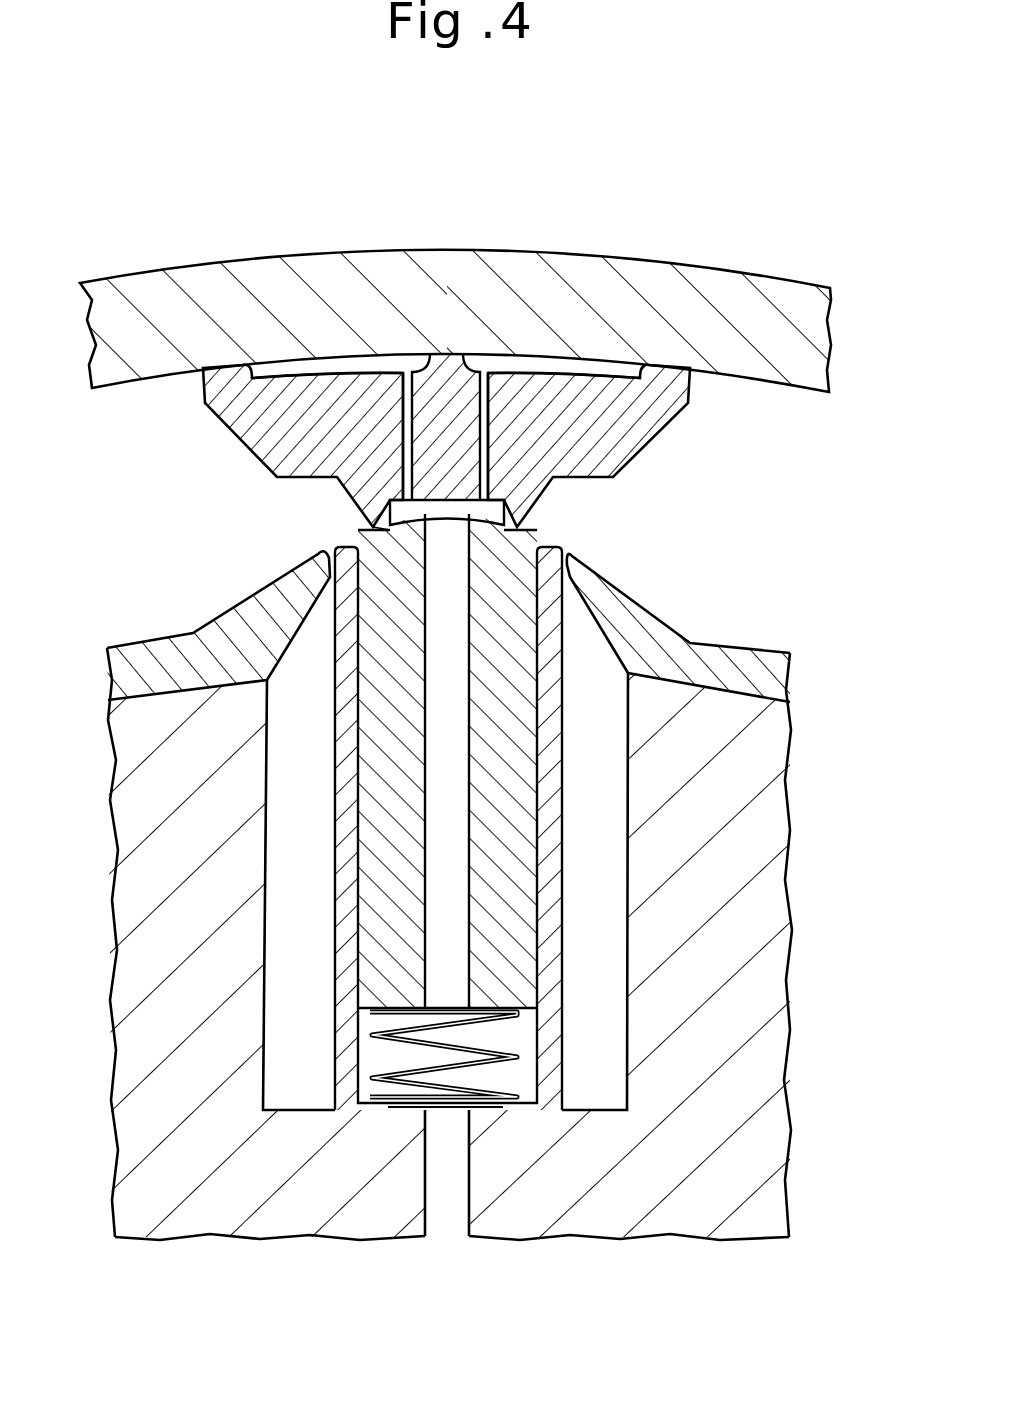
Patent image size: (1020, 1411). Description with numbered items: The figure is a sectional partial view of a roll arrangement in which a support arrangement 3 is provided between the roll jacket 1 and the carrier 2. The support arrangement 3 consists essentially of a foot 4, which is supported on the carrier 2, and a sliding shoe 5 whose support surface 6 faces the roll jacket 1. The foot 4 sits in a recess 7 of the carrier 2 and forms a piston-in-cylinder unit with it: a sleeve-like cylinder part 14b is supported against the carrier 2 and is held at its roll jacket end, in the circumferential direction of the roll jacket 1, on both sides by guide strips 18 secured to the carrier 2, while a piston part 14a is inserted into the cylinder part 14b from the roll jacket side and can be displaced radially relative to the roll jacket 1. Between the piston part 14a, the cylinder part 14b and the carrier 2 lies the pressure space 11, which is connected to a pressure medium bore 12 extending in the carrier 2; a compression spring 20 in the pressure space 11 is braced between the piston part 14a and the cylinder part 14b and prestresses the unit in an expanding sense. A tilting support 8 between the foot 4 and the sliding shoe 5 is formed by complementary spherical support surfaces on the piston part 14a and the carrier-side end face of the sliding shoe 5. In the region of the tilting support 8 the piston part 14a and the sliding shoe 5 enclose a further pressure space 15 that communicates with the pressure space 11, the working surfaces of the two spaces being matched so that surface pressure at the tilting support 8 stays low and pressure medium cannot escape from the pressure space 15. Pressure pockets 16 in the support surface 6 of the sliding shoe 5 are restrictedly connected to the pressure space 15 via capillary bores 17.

The roll jacket 1 is at (778, 297).
The carrier 2 is at (210, 1212).
The support arrangement 3 is at (165, 508).
The foot 4 is at (572, 853).
The sliding shoe 5 is at (650, 423).
The support surface 6 is at (453, 352).
The recess 7 is at (288, 828).
The tilting support 8 is at (338, 525).
The pressure space 11 is at (510, 1038).
The pressure medium bore 12 is at (450, 1220).
The piston part 14a is at (500, 653).
The cylinder part 14b is at (552, 733).
The pressure space 15 is at (489, 513).
The pressure pockets 16 is at (318, 363).
The capillary bores 17 is at (407, 423).
The guide strips 18 is at (247, 612).
The compression spring 20 is at (522, 1062).